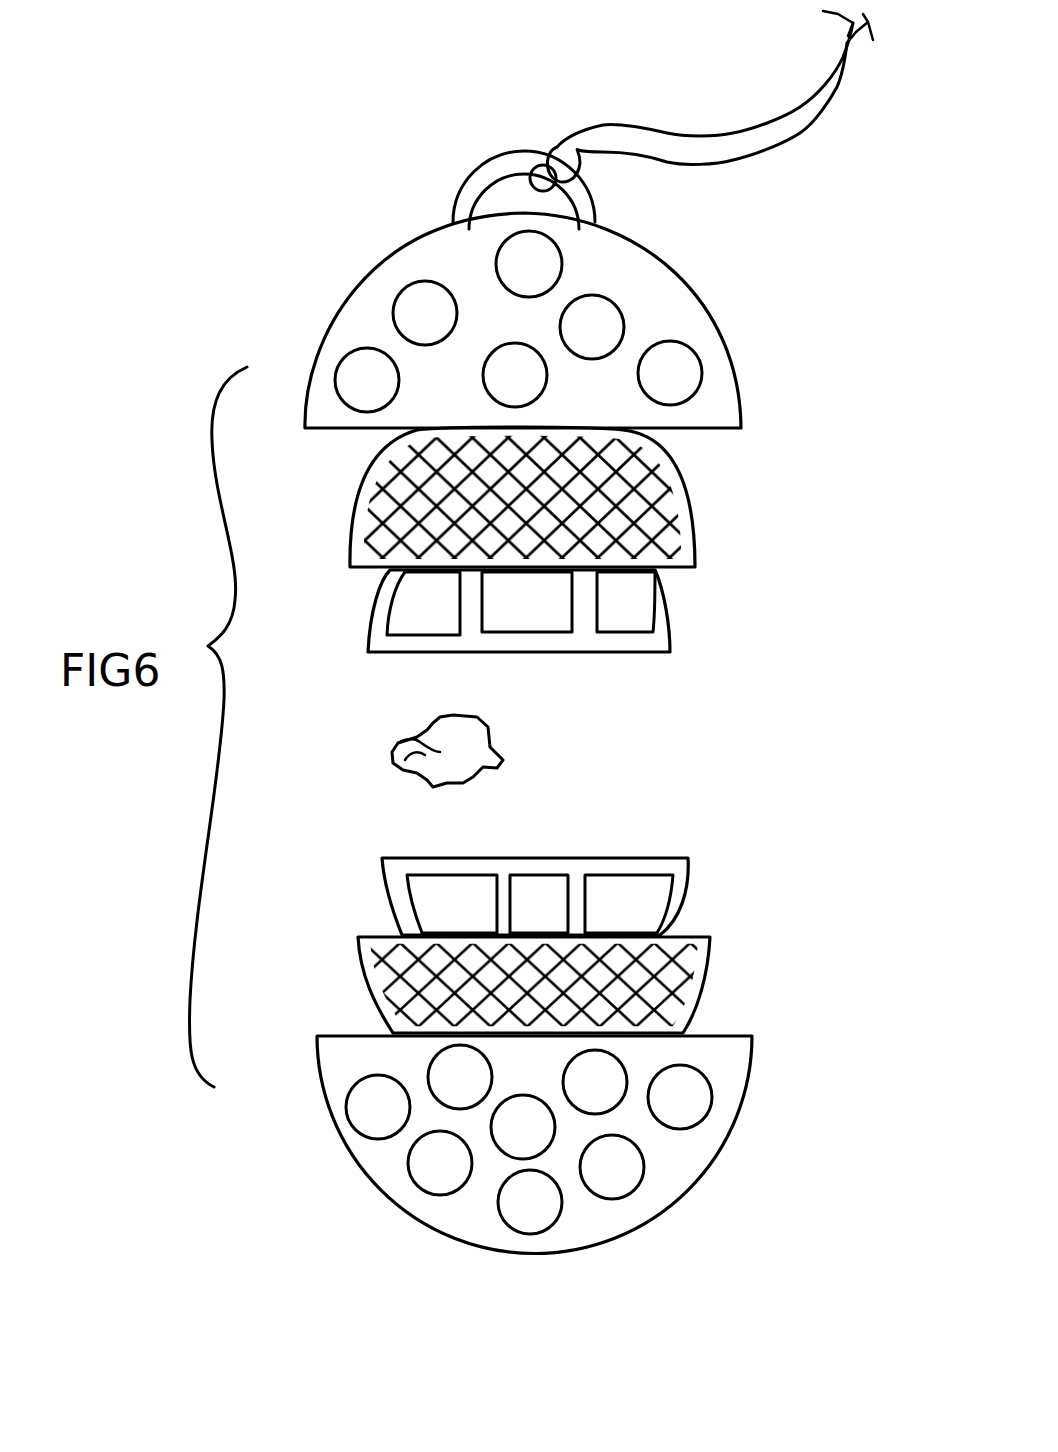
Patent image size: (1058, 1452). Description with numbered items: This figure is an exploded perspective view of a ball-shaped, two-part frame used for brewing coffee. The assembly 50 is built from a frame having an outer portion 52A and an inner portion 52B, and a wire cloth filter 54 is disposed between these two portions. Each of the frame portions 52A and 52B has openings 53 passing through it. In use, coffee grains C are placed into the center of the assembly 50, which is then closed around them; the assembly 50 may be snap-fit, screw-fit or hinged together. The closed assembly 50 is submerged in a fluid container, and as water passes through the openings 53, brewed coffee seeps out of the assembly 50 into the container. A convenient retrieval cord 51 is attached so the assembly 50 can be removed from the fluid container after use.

The assembly 50 is at (873, 677).
The retrieval cord 51 is at (700, 136).
The outer portion 52A is at (665, 299).
The inner portion 52B is at (580, 643).
The openings 53 is at (423, 315).
The wire cloth filter 54 is at (647, 500).
The coffee grains C is at (427, 745).